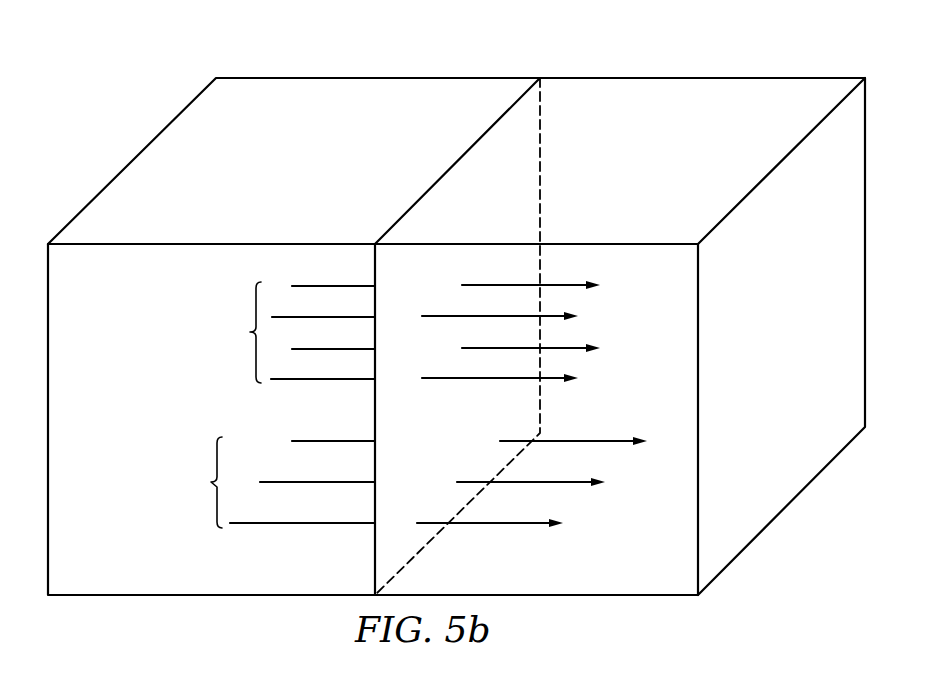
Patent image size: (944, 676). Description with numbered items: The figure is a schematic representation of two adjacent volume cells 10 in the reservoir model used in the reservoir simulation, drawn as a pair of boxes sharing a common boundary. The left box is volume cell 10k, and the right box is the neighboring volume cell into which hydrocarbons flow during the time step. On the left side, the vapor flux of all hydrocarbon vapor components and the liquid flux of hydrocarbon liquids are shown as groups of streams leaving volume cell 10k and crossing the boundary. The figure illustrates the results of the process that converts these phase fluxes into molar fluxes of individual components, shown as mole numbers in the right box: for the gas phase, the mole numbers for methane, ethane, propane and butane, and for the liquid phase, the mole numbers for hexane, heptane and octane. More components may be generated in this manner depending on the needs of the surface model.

The volume cell 10 is at (456, 311).
The volume cell k 10k is at (358, 83).